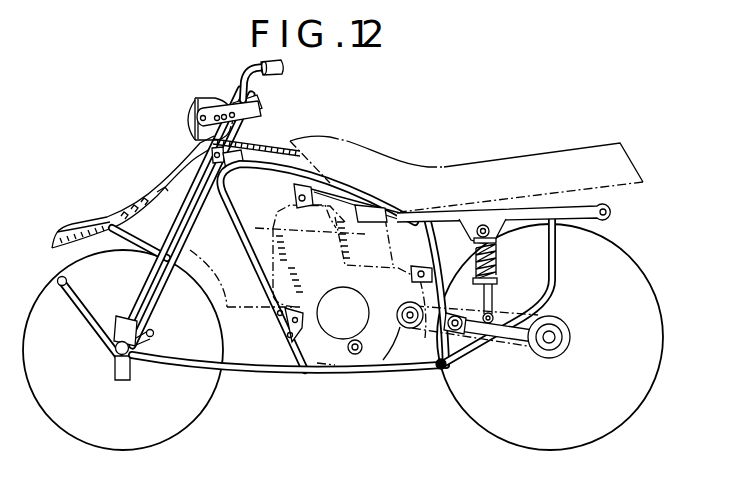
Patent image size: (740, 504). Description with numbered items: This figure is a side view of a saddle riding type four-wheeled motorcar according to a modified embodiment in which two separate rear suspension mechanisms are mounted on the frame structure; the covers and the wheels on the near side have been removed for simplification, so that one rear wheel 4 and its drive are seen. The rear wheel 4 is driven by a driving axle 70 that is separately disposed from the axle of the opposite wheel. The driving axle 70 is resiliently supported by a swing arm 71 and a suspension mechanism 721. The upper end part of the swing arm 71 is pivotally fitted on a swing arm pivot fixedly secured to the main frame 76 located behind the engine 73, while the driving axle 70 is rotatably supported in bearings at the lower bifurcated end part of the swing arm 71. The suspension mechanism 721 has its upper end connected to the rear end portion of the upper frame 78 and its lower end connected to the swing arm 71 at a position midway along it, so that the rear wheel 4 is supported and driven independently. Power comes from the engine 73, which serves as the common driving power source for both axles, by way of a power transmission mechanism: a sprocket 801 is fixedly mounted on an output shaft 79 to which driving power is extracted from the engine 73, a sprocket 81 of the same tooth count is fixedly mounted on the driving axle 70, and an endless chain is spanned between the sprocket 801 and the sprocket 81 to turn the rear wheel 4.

The rear wheel 4 is at (607, 418).
The driving axle 70 is at (566, 322).
The sprocket 81 is at (565, 344).
The swing arm 71 is at (473, 330).
The main frame 76 is at (437, 368).
The sprocket 801 is at (410, 330).
The output shaft 79 is at (403, 330).
The engine 73 is at (320, 360).
The upper frame 78 is at (592, 220).
The suspension mechanism 721 is at (500, 217).